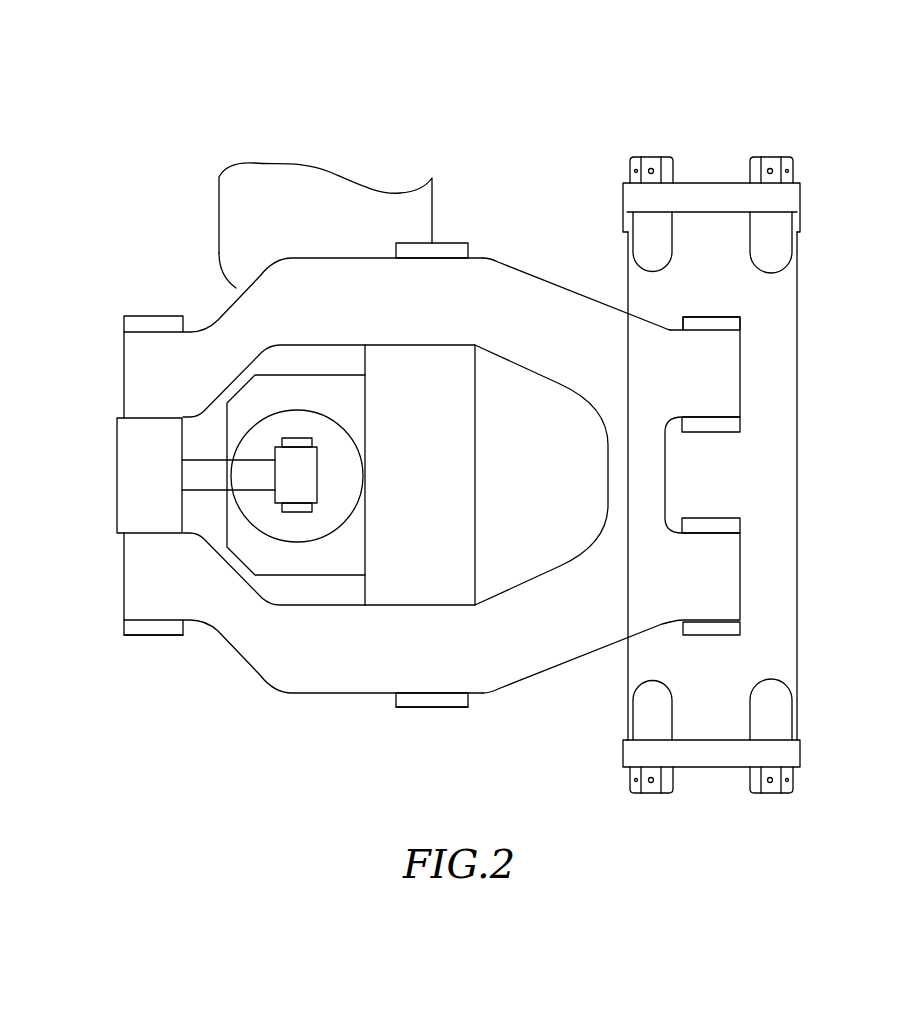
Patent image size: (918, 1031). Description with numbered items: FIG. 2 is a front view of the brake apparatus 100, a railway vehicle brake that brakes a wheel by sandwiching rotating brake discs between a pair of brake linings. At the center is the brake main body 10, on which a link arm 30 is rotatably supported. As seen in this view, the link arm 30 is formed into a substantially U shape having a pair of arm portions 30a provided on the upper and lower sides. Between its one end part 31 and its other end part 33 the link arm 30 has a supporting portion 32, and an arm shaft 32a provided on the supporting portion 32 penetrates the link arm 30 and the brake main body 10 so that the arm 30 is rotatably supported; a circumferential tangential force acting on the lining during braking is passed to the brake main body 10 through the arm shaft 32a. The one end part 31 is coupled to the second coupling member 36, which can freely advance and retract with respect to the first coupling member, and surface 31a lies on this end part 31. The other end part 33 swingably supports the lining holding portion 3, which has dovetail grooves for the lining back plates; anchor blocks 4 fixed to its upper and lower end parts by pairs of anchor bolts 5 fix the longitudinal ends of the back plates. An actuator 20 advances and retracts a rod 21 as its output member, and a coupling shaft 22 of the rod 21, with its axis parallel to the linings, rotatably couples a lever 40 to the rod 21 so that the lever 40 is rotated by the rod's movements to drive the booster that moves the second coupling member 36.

The brake apparatus 100 is at (788, 83).
The lining holding portion 3 is at (757, 283).
The anchor block 4 is at (782, 198).
The anchor bolt 5 is at (770, 165).
The brake main body 10 is at (450, 480).
The actuator 20 is at (247, 378).
The rod 21 is at (302, 450).
The coupling shaft 22 is at (291, 438).
The link arm 30 is at (555, 283).
The arm portion 30a is at (505, 292).
The one end part 31 is at (153, 358).
The flange surface 31a is at (153, 628).
The supporting portion 32 is at (442, 283).
The arm shaft 32a is at (420, 700).
The other end part 33 is at (725, 373).
The second coupling member 36 is at (147, 475).
The lever 40 is at (213, 467).